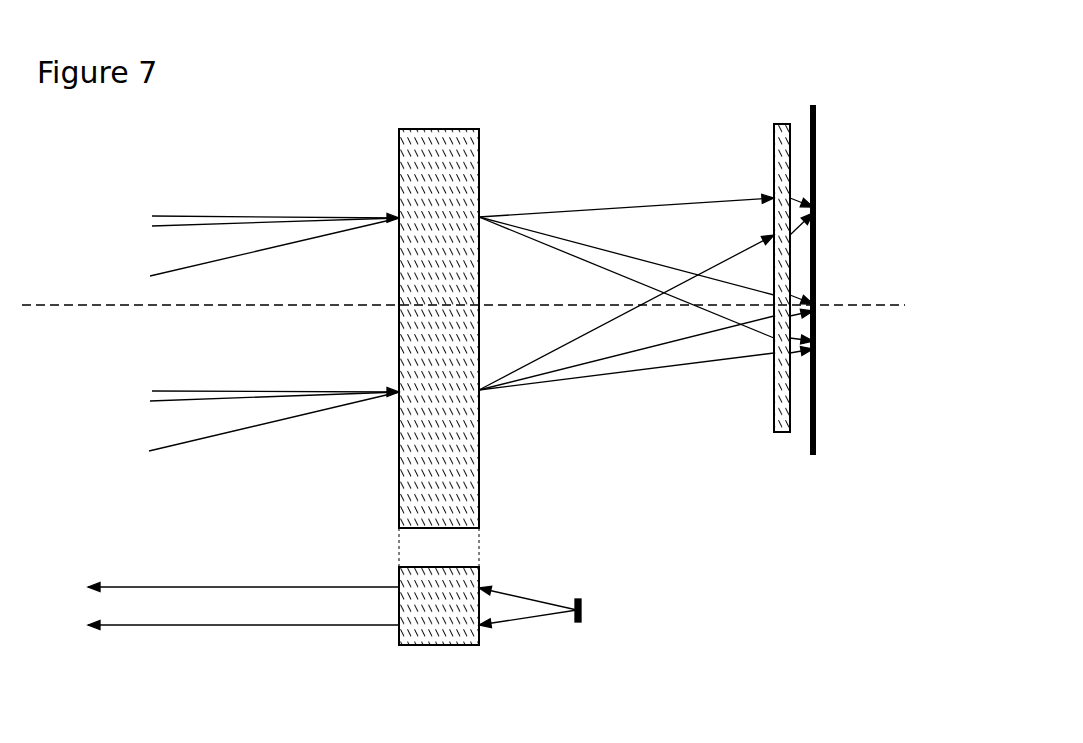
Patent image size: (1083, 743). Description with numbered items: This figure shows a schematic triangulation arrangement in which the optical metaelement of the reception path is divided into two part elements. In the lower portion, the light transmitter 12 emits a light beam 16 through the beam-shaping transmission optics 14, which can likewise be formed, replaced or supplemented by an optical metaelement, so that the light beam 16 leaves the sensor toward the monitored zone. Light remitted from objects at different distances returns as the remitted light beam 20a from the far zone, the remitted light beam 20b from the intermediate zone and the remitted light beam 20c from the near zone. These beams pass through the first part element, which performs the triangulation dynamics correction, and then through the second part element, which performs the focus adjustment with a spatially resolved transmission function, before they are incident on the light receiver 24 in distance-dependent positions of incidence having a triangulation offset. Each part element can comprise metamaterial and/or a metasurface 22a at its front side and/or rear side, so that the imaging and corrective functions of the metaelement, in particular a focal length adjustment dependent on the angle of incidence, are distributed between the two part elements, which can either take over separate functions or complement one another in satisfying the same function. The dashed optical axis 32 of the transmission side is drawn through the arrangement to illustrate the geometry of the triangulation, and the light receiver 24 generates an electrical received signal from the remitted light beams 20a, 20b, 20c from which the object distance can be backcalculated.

The light transmitter 12 is at (581, 620).
The transmission optics 14 is at (423, 625).
The light beam 16 is at (250, 608).
The remitted light beam 20a is at (737, 347).
The remitted light beam 20b is at (733, 290).
The remitted light beam 20c is at (722, 237).
The metasurface 22a is at (479, 195).
The light receiver 24 is at (817, 158).
The optical axis 32 is at (135, 305).